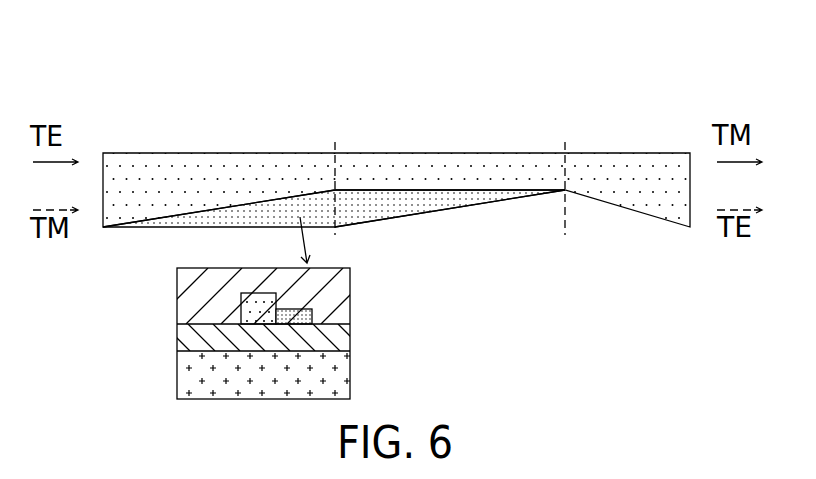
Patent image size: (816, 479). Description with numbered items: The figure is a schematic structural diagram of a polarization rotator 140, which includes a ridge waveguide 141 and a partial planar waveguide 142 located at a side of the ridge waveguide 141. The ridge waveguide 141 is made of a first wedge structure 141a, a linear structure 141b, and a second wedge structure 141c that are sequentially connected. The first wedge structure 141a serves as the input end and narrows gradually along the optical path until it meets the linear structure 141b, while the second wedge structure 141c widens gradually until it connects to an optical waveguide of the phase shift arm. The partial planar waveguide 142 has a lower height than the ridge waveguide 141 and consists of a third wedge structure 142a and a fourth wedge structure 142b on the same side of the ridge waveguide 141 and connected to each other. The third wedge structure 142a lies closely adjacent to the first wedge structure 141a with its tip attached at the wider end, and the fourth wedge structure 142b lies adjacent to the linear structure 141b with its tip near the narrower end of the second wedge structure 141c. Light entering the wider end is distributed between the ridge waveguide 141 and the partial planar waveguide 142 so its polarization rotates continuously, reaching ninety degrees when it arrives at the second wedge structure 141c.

The polarization rotator 140 is at (560, 59).
The ridge waveguide 141 is at (248, 296).
The first wedge structure 141a is at (278, 167).
The linear structure 141b is at (412, 168).
The second wedge structure 141c is at (615, 170).
The partial planar waveguide 142 is at (498, 246).
The third wedge structure 142a is at (298, 217).
The fourth wedge structure 142b is at (395, 205).